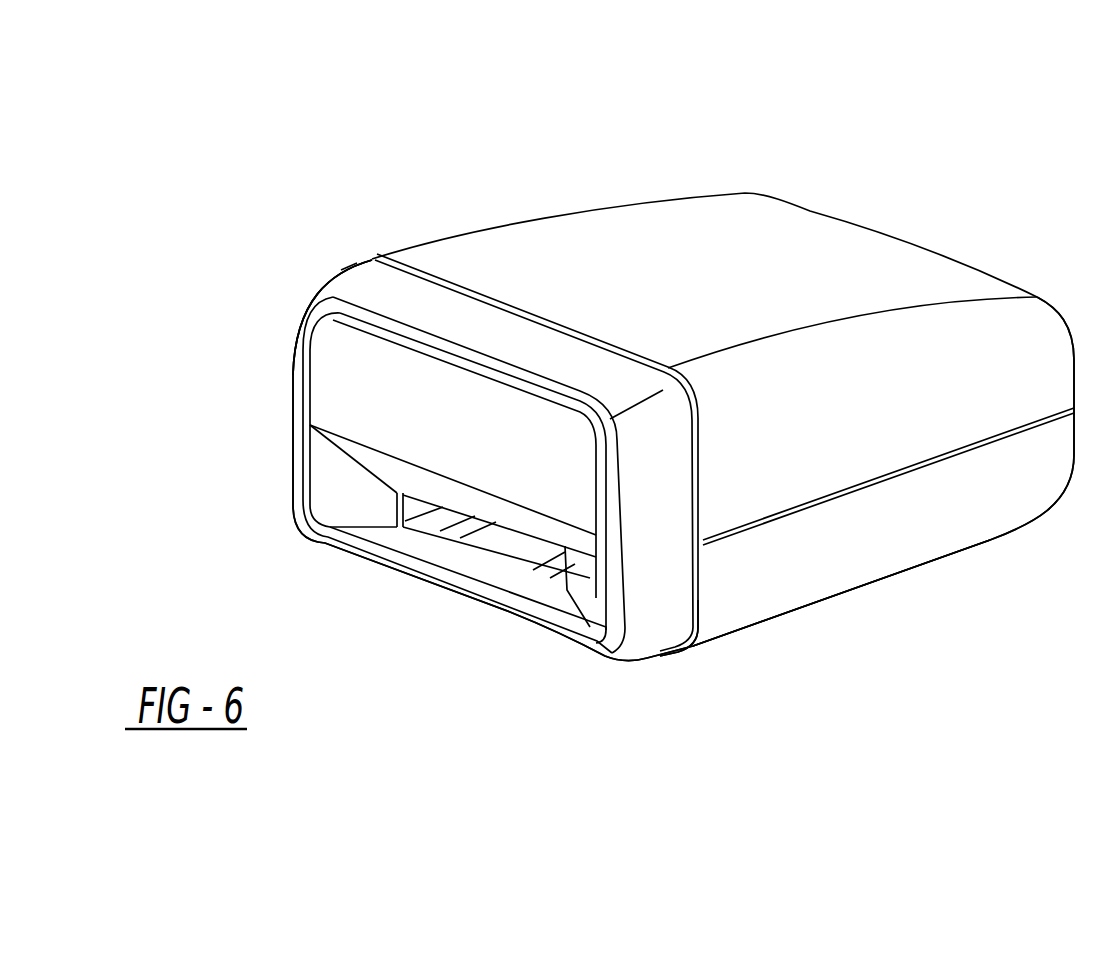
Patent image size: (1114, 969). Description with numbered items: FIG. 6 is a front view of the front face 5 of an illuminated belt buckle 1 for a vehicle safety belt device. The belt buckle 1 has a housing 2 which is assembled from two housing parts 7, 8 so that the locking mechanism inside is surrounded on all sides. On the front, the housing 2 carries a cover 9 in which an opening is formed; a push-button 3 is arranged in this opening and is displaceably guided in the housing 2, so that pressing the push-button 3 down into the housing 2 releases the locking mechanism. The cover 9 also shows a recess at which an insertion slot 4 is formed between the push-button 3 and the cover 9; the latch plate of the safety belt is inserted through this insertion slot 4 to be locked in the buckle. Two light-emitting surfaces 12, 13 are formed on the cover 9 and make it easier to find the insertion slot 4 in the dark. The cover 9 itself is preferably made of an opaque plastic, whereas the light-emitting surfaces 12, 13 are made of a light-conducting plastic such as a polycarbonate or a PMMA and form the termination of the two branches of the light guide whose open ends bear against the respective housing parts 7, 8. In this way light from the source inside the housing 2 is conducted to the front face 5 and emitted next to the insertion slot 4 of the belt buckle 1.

The illuminated belt buckle 1 is at (358, 158).
The housing 2 is at (513, 222).
The push-button 3 is at (330, 382).
The insertion slot 4 is at (510, 548).
The front face 5 is at (322, 318).
The housing part 7 is at (797, 237).
The housing part 8 is at (847, 550).
The cover 9 is at (365, 287).
The light-emitting surface 12 is at (593, 595).
The light-emitting surface 13 is at (310, 473).